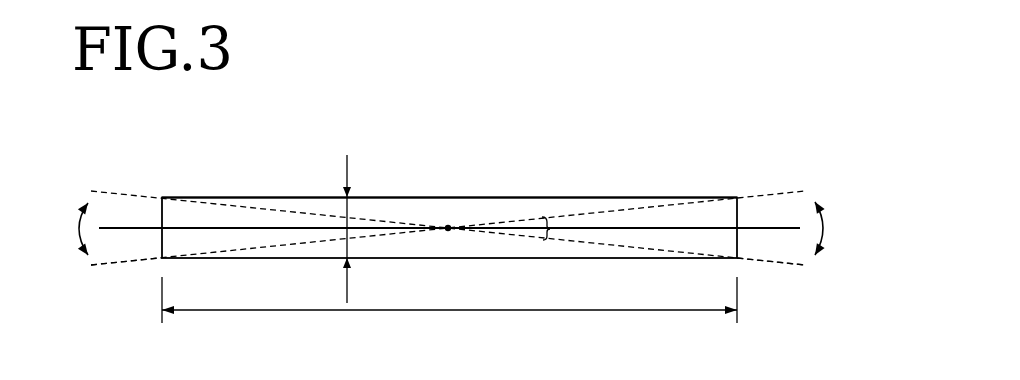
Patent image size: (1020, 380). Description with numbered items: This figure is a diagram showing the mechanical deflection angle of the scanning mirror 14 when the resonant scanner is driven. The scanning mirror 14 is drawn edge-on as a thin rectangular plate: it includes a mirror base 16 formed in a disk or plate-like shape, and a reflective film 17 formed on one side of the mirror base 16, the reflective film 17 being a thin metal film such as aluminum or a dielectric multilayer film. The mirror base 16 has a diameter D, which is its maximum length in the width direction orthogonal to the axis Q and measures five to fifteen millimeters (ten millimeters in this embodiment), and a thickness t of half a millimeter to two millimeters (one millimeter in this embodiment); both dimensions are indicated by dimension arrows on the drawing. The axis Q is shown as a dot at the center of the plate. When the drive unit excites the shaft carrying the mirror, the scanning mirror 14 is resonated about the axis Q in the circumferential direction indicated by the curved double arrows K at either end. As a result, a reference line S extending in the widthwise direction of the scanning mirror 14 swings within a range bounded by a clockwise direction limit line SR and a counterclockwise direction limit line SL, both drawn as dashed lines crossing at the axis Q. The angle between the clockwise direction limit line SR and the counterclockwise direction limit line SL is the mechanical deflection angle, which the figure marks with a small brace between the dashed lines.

The scanning mirror 14 is at (630, 150).
The mirror base 16 is at (612, 218).
The reflective film 17 is at (551, 197).
The axis Q is at (448, 224).
The thickness t is at (348, 208).
The diameter D is at (446, 311).
The direction of arrow K is at (80, 228).
The reference line S is at (775, 228).
The counterclockwise direction limit line SL is at (128, 263).
The clockwise direction limit line SR is at (773, 264).